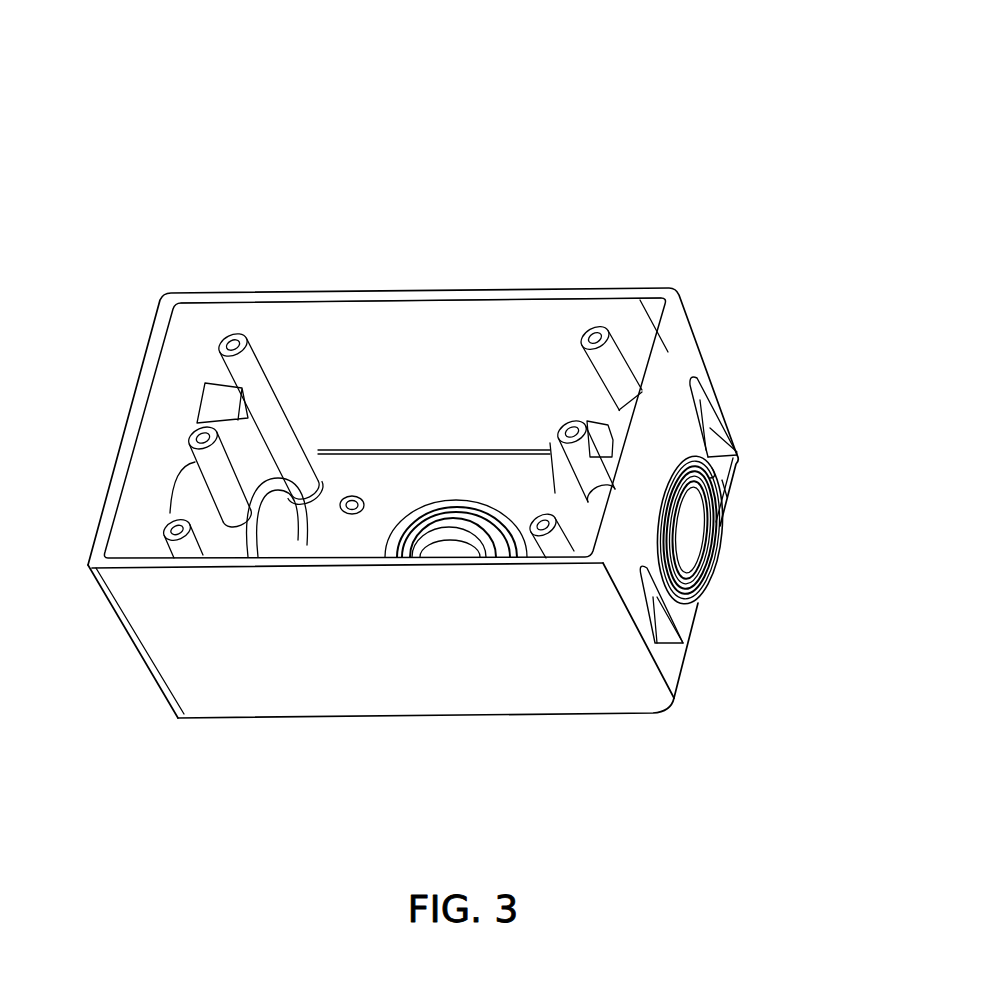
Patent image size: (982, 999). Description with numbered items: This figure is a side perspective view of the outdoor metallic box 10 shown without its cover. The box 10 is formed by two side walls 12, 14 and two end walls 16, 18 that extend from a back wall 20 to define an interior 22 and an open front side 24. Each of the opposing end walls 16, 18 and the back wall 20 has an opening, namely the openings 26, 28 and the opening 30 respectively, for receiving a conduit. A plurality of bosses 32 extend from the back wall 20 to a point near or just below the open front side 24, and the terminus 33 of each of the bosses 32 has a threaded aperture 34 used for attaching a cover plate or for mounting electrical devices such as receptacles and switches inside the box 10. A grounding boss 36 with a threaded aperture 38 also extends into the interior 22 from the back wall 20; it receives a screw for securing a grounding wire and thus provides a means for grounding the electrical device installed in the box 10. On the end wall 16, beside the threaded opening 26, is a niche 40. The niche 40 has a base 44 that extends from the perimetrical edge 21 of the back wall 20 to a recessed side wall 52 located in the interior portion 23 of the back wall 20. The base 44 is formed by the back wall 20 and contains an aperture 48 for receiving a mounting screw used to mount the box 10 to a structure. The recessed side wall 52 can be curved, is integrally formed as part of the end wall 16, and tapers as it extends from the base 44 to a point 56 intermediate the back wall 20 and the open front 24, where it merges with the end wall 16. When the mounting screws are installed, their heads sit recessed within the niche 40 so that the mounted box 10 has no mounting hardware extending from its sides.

The outdoor metallic box 10 is at (338, 172).
The side wall 12 is at (500, 342).
The side wall 14 is at (248, 683).
The end wall 16 is at (667, 347).
The end wall 18 is at (167, 398).
The back wall 20 is at (368, 478).
The perimetrical edge 21 is at (457, 717).
The interior 22 is at (305, 335).
The interior portion 23 is at (372, 538).
The open front side 24 is at (603, 320).
The opening 26 is at (700, 534).
The opening 28 is at (273, 533).
The opening 30 is at (468, 545).
The bosses 32 is at (257, 380).
The terminus 33 is at (632, 318).
The threaded apertures 34 is at (598, 330).
The grounding boss 36 is at (547, 443).
The threaded aperture 38 is at (557, 428).
The niche 40 is at (713, 427).
The base 44 is at (738, 467).
The aperture 48 is at (727, 497).
The recessed side wall 52 is at (700, 408).
The point 56 is at (697, 378).